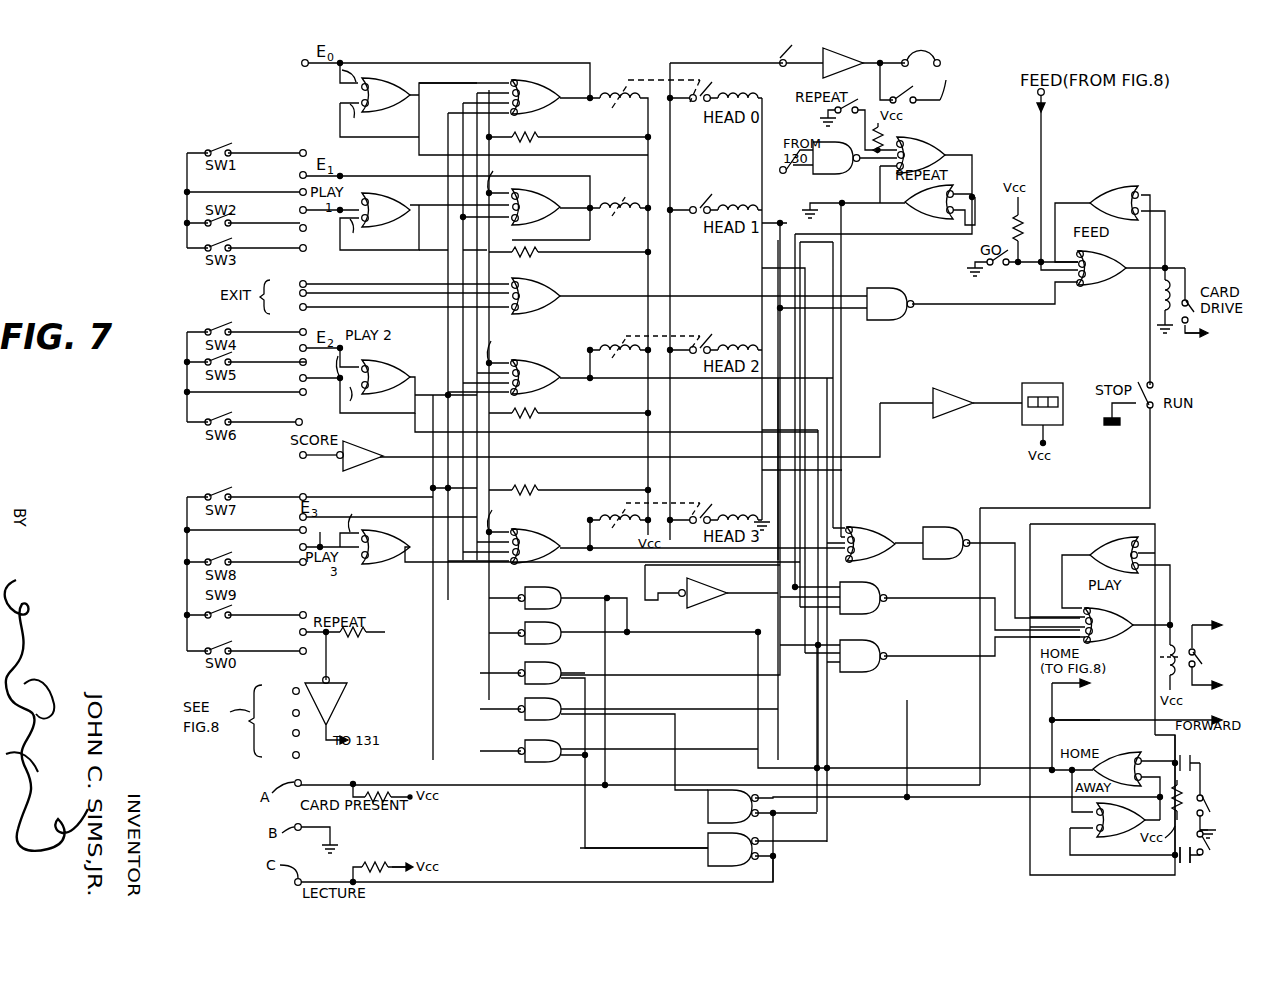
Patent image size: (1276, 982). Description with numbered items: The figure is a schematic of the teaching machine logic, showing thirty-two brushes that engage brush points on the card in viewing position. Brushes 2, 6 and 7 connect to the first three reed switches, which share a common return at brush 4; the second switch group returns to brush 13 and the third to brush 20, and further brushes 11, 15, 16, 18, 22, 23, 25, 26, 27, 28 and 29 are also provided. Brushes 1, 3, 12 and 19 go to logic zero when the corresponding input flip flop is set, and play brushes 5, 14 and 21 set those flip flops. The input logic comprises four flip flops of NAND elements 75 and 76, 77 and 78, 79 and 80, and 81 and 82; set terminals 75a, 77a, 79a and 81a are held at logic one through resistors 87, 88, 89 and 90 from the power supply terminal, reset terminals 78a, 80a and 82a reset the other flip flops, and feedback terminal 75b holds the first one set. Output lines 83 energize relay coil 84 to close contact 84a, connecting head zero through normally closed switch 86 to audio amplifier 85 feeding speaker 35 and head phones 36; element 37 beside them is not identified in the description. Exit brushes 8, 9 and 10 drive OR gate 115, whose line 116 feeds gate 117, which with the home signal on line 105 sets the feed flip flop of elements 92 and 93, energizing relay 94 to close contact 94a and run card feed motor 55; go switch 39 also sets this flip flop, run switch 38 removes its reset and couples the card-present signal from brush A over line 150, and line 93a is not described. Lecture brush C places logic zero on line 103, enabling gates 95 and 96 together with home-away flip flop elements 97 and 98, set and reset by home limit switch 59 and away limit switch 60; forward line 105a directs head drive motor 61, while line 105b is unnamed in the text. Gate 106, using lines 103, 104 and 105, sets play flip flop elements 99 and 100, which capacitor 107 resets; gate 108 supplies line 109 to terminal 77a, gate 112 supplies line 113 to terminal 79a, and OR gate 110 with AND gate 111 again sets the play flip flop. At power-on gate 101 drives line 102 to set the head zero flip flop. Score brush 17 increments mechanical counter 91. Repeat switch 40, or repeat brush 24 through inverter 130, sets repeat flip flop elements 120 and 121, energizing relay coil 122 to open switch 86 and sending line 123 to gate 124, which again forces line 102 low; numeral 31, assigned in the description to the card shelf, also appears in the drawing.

The brush 1 is at (304, 63).
The brush 2 is at (303, 151).
The brush 3 is at (295, 174).
The brush 4 is at (295, 189).
The brush 5 is at (295, 210).
The brush 6 is at (295, 230).
The brush 7 is at (295, 255).
The exit brush 8 is at (295, 277).
The exit brush 9 is at (295, 292).
The exit brush 10 is at (292, 307).
The brush 11 is at (294, 323).
The brush 12 is at (292, 346).
The brush 13 is at (292, 366).
The brush 14 is at (292, 384).
The brush 15 is at (292, 399).
The brush 16 is at (311, 421).
The brush 17 is at (292, 456).
The brush 18 is at (293, 488).
The brush 19 is at (292, 517).
The brush 20 is at (291, 531).
The brush 21 is at (289, 549).
The brush 22 is at (291, 566).
The brush 23 is at (292, 606).
The brush 24 is at (299, 632).
The brush 25 is at (288, 660).
The brush 26 is at (292, 691).
The brush 27 is at (292, 713).
The brush 28 is at (292, 733).
The brush 29 is at (292, 755).
The shelf 31 is at (836, 112).
The speaker 35 is at (945, 103).
The head phones 36 is at (933, 58).
The switch 37 is at (900, 92).
The switch 38 is at (1154, 387).
The go switch 39 is at (993, 266).
The switch 40 is at (830, 143).
The card feed motor 55 is at (1214, 324).
The limit switch 59 is at (1204, 786).
The limit switch 60 is at (1208, 839).
The head drive motor 61 is at (1232, 655).
The NAND element 75 is at (398, 70).
The terminal 75a is at (365, 118).
The flip flop terminal 75b is at (354, 70).
The NAND element 76 is at (536, 77).
The NAND element 77 is at (390, 202).
The terminal 77a is at (370, 235).
The NAND element 78 is at (543, 196).
The input terminal 78a is at (496, 180).
The NAND element 79 is at (394, 360).
The terminal 79a is at (368, 401).
The NAND element 80 is at (537, 364).
The input terminal 80a is at (510, 344).
The NAND element 81 is at (378, 530).
The terminal 81a is at (360, 511).
The NAND element 82 is at (542, 545).
The input terminal 82a is at (513, 516).
The lines 83 is at (588, 98).
The relay coil 84 is at (608, 77).
The contact 84a is at (692, 105).
The audio amplifier 85 is at (842, 63).
The switch 86 is at (794, 46).
The resistor 87 is at (524, 134).
The resistor 88 is at (592, 208).
The resistor 89 is at (538, 410).
The resistor 90 is at (526, 486).
The mechanical counter 91 is at (1040, 382).
The NAND element 92 is at (1116, 192).
The NAND element 93 is at (1117, 261).
The feed input line 93a is at (1042, 154).
The relay 94 is at (1154, 308).
The contact 94a is at (1191, 266).
The gate element 95 is at (712, 810).
The gate element 96 is at (712, 853).
The flip flop element 97 is at (1114, 754).
The flip flop element 98 is at (1040, 825).
The flip flop element 99 is at (1102, 542).
The flip flop element 100 is at (1106, 613).
The gate 101 is at (546, 590).
The line 102 is at (513, 243).
The line 103 is at (558, 850).
The line 104 is at (805, 392).
The line 105 is at (874, 348).
The forward line 105a is at (1090, 718).
The home line 105b is at (1042, 690).
The gate 106 is at (868, 587).
The capacitor 107 is at (1188, 866).
The gate 108 is at (553, 670).
The line 109 is at (490, 647).
The OR gate 110 is at (868, 530).
The AND gate 111 is at (939, 532).
The AND gate 112 is at (619, 723).
The line 113 is at (490, 680).
The OR gate 115 is at (556, 293).
The line 116 is at (695, 294).
The gate 117 is at (883, 292).
The flip flop element 120 is at (931, 144).
The flip flop element 121 is at (904, 207).
The relay coil 122 is at (822, 200).
The line 123 is at (890, 232).
The gate 124 is at (558, 626).
The inverter 130 is at (338, 691).
The line 150 is at (524, 784).